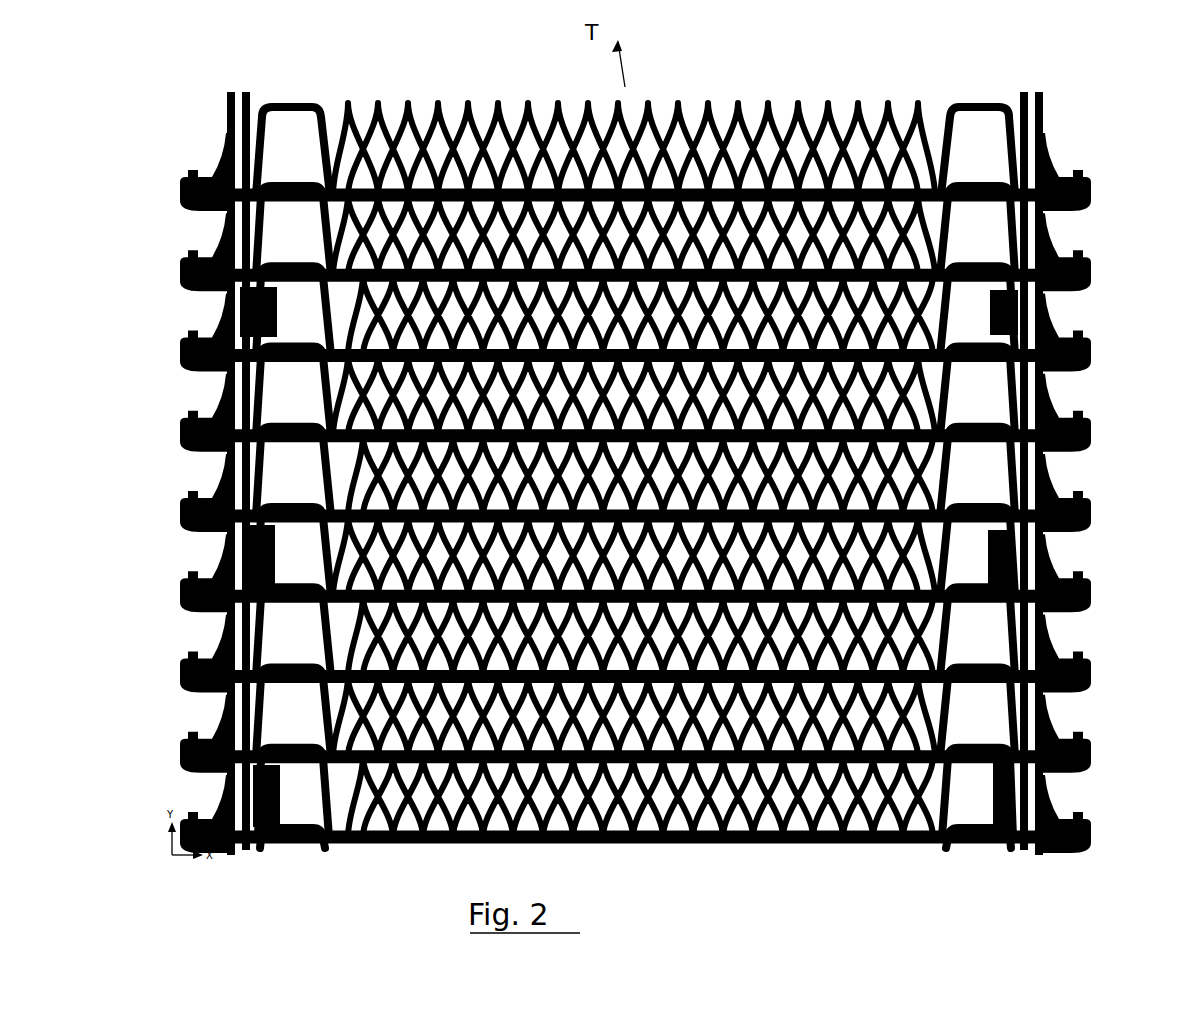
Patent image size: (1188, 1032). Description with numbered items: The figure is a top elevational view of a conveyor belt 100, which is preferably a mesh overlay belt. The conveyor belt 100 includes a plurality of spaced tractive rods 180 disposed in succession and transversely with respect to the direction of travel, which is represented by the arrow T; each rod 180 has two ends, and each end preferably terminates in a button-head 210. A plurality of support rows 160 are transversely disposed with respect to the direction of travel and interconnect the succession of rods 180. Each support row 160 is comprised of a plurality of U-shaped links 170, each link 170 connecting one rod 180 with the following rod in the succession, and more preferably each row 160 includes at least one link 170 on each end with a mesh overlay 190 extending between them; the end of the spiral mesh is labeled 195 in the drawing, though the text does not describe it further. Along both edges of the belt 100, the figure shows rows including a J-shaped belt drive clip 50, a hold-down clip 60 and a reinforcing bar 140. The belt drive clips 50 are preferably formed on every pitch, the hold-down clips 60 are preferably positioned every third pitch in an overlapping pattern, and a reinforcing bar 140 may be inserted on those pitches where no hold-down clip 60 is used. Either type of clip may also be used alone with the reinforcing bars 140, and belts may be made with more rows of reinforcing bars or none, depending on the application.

The belt drive clip 50 is at (1062, 156).
The hold-down clip 60 is at (245, 541).
The conveyor belt 100 is at (133, 205).
The reinforcing bar 140 is at (1035, 480).
The support row 160 is at (253, 388).
The U-shaped link 170 is at (258, 468).
The tractive rod 180 is at (278, 742).
The mesh overlay 190 is at (712, 125).
The spiral end loops 195 is at (325, 178).
The button-head 210 is at (203, 762).